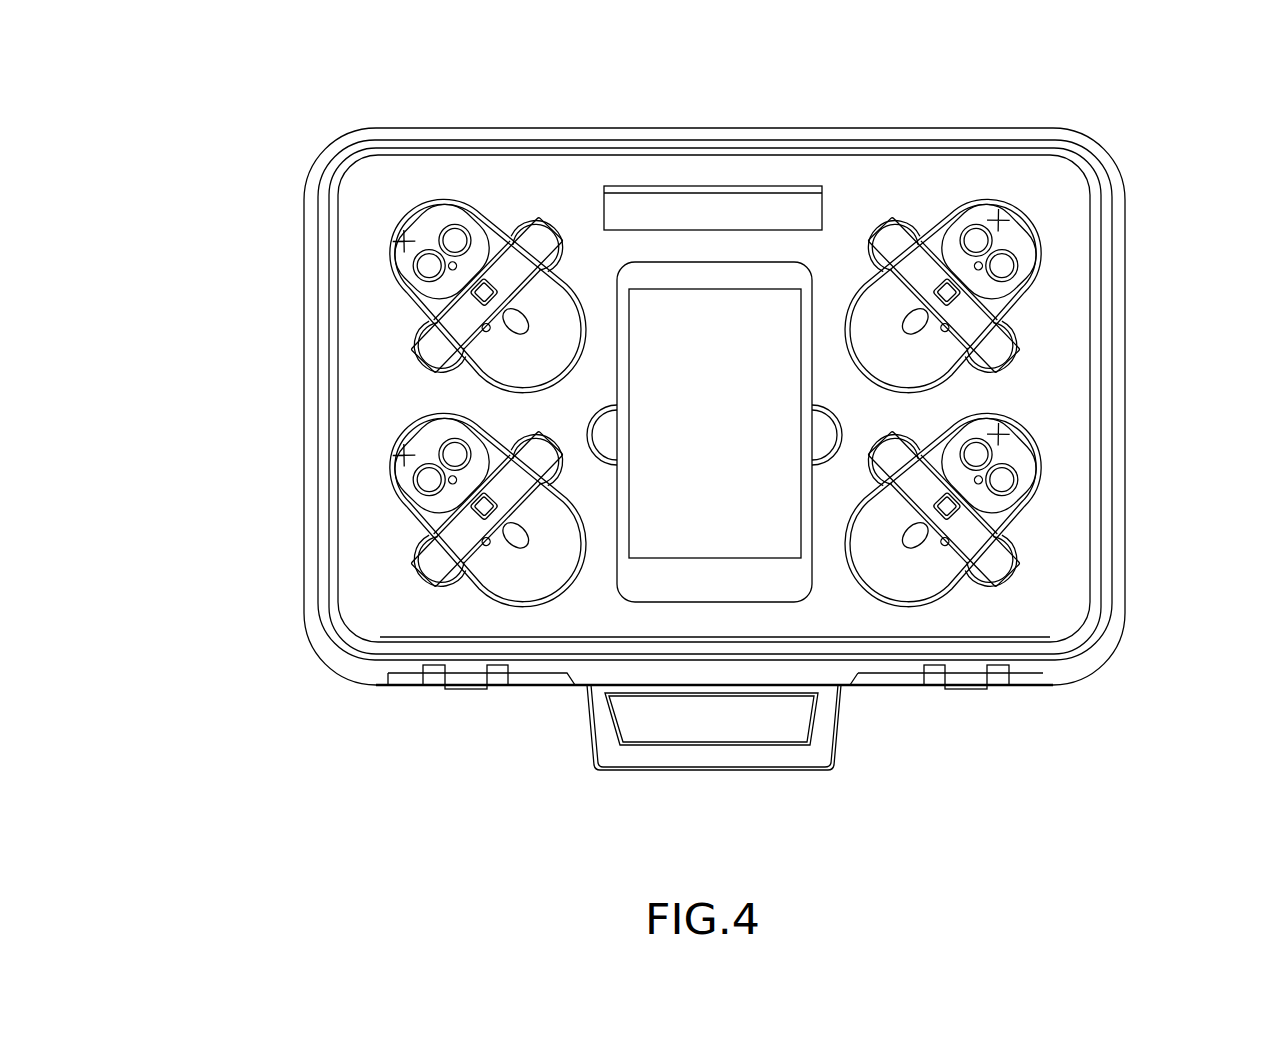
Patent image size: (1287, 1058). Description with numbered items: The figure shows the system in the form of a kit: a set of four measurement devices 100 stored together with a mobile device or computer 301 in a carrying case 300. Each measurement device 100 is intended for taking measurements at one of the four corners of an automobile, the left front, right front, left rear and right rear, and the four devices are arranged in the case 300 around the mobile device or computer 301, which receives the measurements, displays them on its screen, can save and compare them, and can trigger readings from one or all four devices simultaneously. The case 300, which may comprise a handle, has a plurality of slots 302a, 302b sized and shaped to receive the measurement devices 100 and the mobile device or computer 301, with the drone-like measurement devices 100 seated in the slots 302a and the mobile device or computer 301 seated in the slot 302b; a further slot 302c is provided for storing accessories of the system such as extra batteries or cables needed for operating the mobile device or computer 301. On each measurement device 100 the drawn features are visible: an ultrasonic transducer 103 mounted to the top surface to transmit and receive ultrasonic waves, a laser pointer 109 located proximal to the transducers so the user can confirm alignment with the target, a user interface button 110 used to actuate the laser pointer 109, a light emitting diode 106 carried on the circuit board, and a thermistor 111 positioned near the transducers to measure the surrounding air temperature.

The measurement device 100 is at (700, 407).
The ultrasonic transducer 103 is at (428, 225).
The light emitting diode (LED) 106 is at (480, 330).
The laser pointer 109 is at (433, 263).
The user interface (UI) button 110 is at (462, 293).
The thermistor 111 is at (395, 240).
The case 300 is at (541, 690).
The mobile device or computer 301 is at (785, 608).
The slot 302a is at (537, 243).
The slot 302b is at (608, 440).
The slot 302c is at (740, 212).